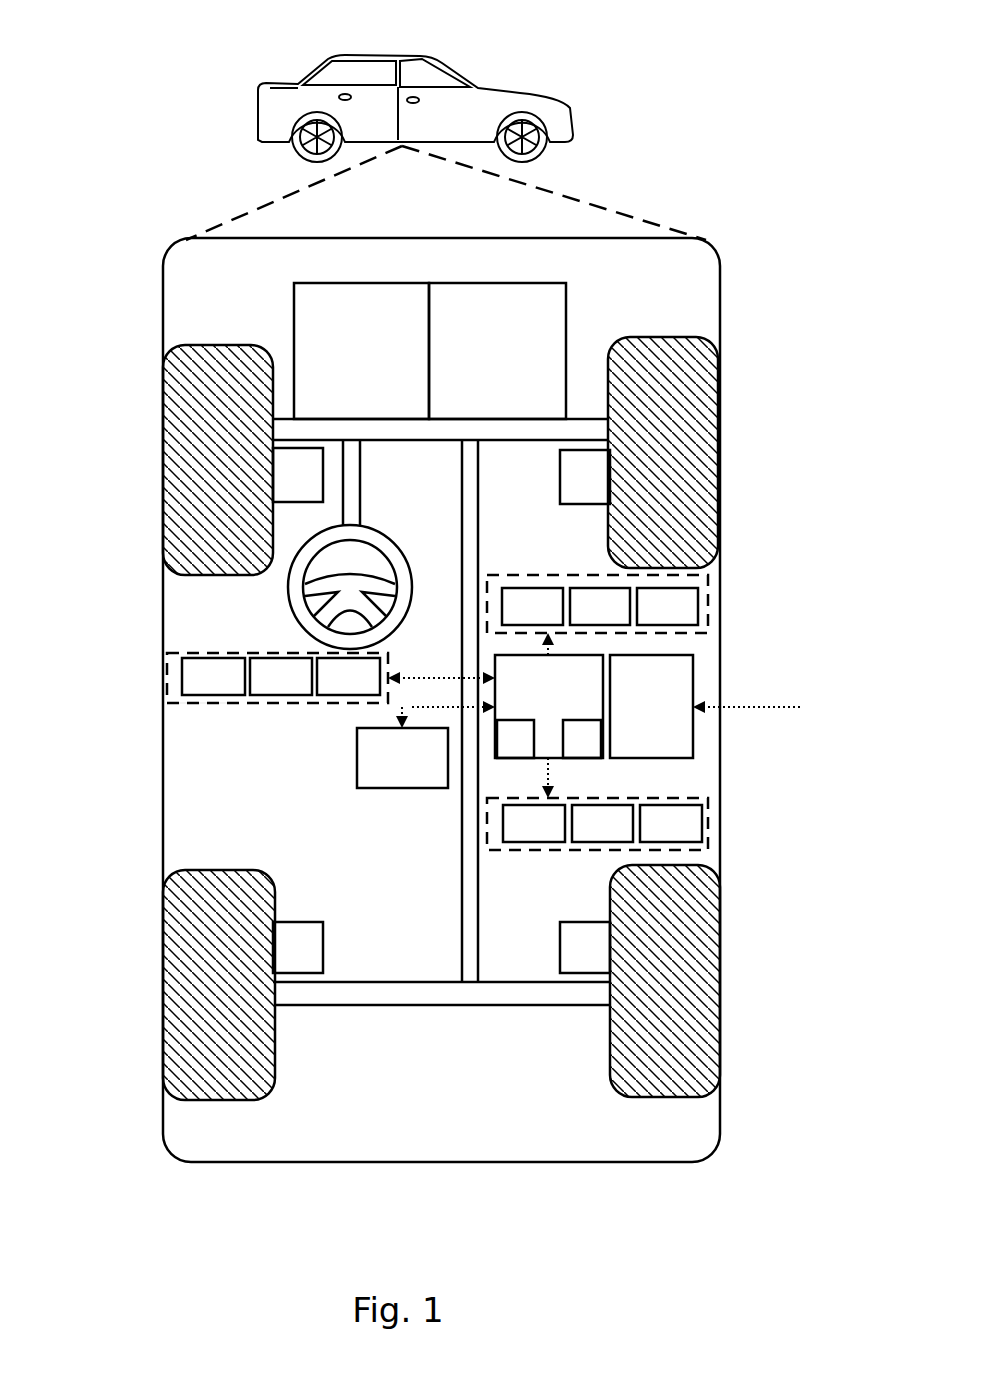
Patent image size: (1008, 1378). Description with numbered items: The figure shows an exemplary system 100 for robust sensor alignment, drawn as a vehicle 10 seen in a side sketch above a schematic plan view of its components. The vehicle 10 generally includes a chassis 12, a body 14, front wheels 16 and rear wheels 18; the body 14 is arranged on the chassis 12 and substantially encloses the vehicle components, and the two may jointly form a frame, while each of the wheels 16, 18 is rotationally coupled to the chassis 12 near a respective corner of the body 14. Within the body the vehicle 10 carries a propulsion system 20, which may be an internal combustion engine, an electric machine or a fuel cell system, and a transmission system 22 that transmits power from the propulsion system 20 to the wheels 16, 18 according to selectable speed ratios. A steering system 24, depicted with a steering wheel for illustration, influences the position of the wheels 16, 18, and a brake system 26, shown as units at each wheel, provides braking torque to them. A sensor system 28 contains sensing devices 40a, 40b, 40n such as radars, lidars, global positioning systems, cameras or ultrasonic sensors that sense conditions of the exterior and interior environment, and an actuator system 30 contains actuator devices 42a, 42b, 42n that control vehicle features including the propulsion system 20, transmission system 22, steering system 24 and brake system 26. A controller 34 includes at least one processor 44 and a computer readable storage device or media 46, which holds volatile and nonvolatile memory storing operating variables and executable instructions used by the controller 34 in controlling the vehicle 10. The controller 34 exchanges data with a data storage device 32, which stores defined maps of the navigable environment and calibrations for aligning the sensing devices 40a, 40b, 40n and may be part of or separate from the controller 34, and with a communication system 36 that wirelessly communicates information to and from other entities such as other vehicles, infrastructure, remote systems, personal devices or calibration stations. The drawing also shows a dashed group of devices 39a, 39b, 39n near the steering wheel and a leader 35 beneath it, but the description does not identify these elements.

The vehicle 10 is at (270, 136).
The system 100 is at (752, 252).
The chassis 12 is at (462, 905).
The body 14 is at (236, 653).
The front wheels 16 is at (213, 345).
The rear wheels 18 is at (237, 1100).
The propulsion system 20 is at (361, 351).
The transmission system 22 is at (497, 351).
The steering system 24 is at (396, 482).
The brake system 26 is at (441, 710).
The sensor system 28 is at (597, 576).
The actuator system 30 is at (597, 852).
The data storage device 32 is at (402, 758).
The controller 34 is at (549, 706).
The dashboard 35 is at (230, 706).
The communication system 36 is at (651, 706).
The input device 39a is at (213, 676).
The input device 39b is at (281, 676).
The input device 39n is at (348, 676).
The sensing device 40a is at (532, 606).
The sensing device 40b is at (600, 606).
The sensing device 40n is at (667, 606).
The actuator device 42a is at (534, 823).
The actuator device 42b is at (602, 823).
The actuator device 42n is at (671, 823).
The processor 44 is at (515, 739).
The computer readable storage device or media 46 is at (582, 739).